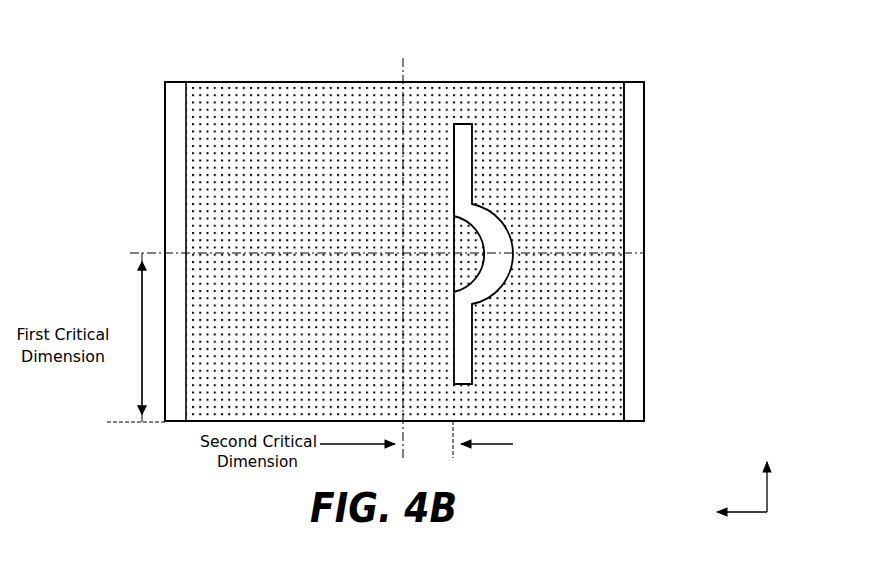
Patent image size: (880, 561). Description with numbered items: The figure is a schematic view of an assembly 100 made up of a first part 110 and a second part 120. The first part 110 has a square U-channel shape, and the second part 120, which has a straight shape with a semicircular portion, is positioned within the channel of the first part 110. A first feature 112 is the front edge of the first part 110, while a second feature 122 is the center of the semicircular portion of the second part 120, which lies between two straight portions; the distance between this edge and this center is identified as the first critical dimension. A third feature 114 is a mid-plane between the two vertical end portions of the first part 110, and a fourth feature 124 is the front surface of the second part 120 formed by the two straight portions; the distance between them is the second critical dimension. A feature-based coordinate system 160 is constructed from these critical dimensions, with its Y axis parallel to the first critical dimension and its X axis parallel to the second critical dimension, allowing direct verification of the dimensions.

The assembly 100 is at (152, 55).
The first part 110 is at (633, 409).
The first feature 112 is at (537, 421).
The third feature 114 is at (403, 125).
The second part 120 is at (460, 356).
The second feature 122 is at (463, 253).
The fourth feature 124 is at (454, 190).
The feature-based coordinate system 160 is at (767, 495).